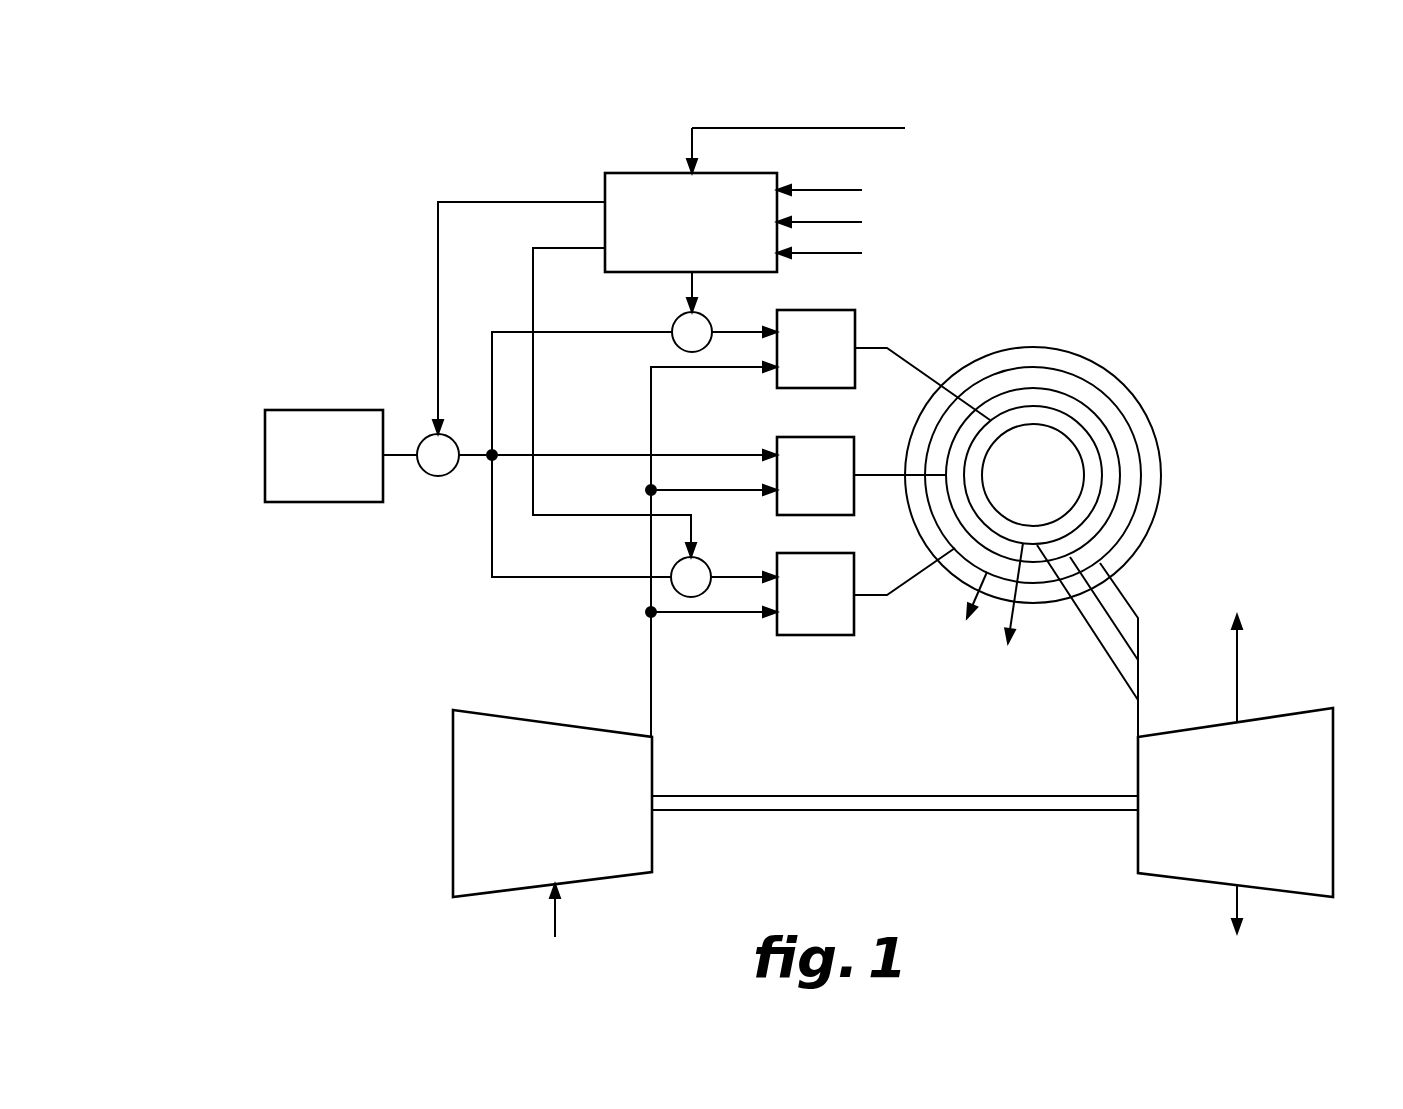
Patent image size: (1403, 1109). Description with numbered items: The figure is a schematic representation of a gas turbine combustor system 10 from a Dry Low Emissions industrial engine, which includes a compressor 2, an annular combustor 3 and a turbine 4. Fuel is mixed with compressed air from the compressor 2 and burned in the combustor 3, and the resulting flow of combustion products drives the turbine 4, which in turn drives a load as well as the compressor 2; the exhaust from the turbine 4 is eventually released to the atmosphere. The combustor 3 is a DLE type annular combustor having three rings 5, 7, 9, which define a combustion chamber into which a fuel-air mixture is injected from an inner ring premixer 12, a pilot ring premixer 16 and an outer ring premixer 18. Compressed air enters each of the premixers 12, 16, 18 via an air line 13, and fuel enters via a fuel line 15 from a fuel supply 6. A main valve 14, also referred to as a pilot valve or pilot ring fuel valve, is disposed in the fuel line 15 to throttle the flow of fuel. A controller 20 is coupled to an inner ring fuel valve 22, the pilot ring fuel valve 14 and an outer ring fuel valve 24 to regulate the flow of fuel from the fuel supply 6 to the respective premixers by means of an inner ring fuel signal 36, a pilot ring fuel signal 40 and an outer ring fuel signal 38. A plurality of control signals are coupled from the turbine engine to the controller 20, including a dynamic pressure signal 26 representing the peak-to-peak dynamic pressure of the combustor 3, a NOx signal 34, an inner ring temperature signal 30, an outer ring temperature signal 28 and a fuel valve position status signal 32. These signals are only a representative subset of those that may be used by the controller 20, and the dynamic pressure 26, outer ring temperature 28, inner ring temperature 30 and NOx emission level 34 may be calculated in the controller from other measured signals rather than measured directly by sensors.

The compressor 2 is at (562, 853).
The combustor 3 is at (1132, 390).
The turbine 4 is at (1247, 853).
The ring 5 is at (1062, 408).
The fuel supply 6 is at (325, 410).
The ring 7 is at (1120, 455).
The ring 9 is at (1138, 498).
The gas turbine combustor system 10 is at (976, 893).
The inner ring premixer 12 is at (820, 635).
The air line 13 is at (651, 650).
The main valve 14 is at (438, 476).
The fuel line 15 is at (539, 577).
The pilot ring premixer 16 is at (853, 452).
The outer ring premixer 18 is at (855, 326).
The controller 20 is at (635, 173).
The inner ring fuel valve 22 is at (670, 343).
The outer ring fuel valve 24 is at (706, 563).
The dynamic pressure signal 26 is at (1292, 668).
The outer ring temperature signal 28 is at (845, 383).
The inner ring temperature signal 30 is at (1010, 609).
The fuel valve position status signal 32 is at (839, 253).
The NOx signal 34 is at (1233, 892).
The inner ring fuel signal 36 is at (688, 281).
The outer ring fuel signal 38 is at (533, 273).
The pilot ring fuel signal 40 is at (480, 202).